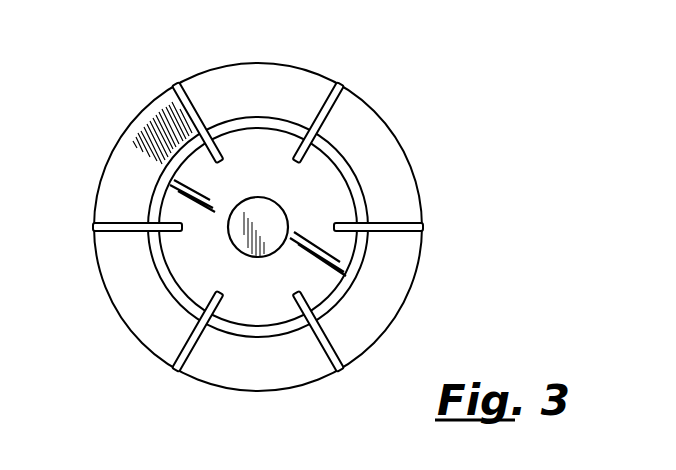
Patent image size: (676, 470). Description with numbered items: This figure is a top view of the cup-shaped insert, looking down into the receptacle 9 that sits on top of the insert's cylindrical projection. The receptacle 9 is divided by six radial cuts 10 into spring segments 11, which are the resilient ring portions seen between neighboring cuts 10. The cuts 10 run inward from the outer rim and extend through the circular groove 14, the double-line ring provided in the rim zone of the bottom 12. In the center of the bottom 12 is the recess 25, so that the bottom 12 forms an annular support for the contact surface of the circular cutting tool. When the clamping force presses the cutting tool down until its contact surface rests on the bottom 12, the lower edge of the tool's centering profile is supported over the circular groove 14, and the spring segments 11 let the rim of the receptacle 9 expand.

The receptacle 9 is at (268, 93).
The cuts 10 is at (177, 83).
The spring segments 11 is at (307, 87).
The bottom 12 is at (334, 188).
The circular groove 14 is at (159, 262).
The recess 25 is at (257, 210).